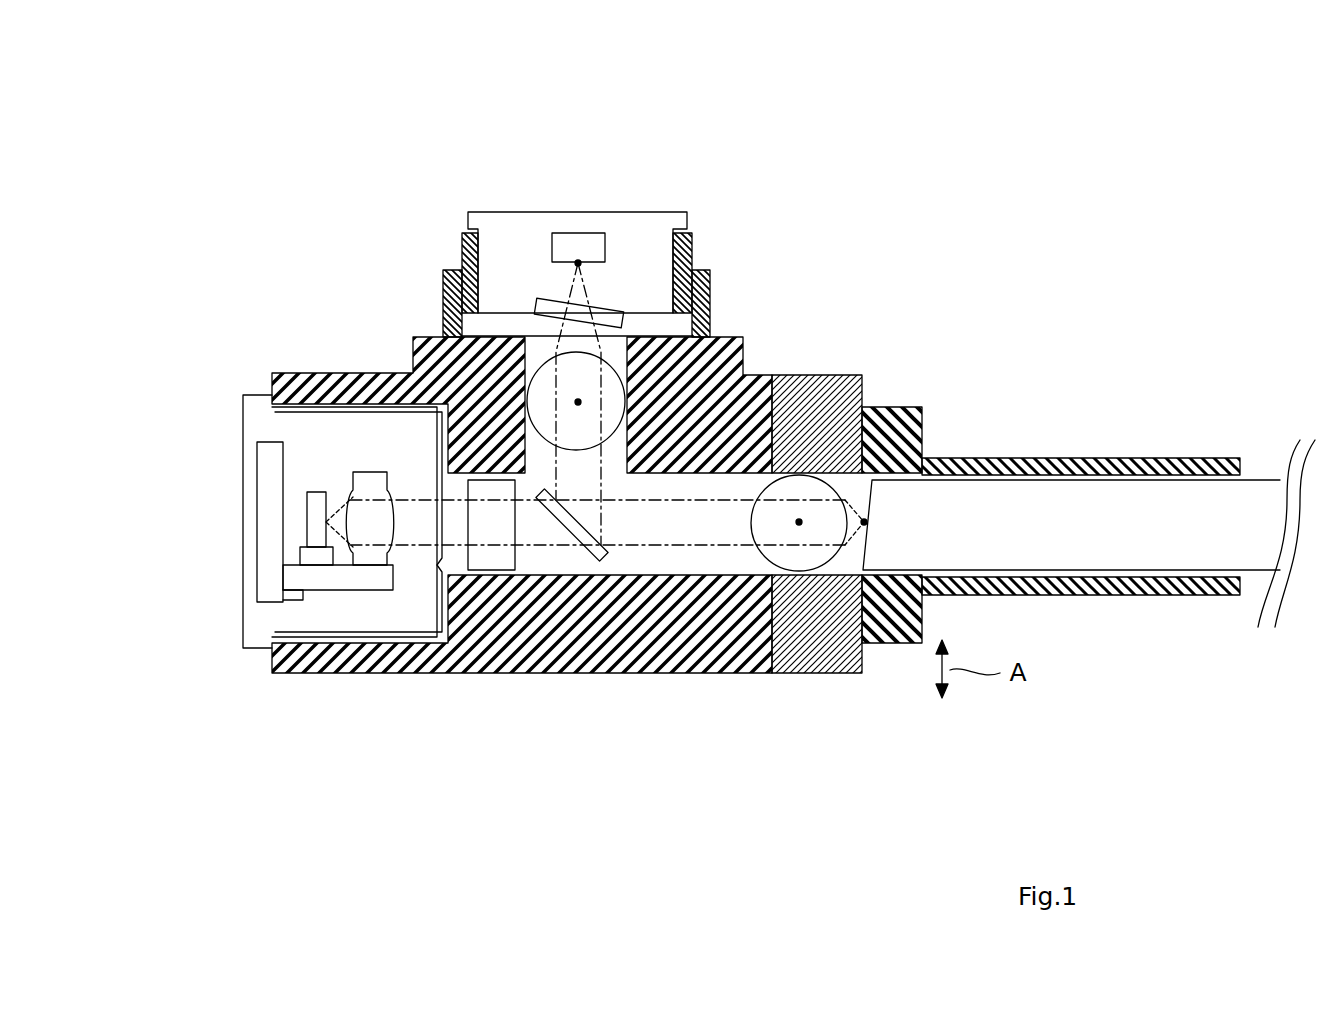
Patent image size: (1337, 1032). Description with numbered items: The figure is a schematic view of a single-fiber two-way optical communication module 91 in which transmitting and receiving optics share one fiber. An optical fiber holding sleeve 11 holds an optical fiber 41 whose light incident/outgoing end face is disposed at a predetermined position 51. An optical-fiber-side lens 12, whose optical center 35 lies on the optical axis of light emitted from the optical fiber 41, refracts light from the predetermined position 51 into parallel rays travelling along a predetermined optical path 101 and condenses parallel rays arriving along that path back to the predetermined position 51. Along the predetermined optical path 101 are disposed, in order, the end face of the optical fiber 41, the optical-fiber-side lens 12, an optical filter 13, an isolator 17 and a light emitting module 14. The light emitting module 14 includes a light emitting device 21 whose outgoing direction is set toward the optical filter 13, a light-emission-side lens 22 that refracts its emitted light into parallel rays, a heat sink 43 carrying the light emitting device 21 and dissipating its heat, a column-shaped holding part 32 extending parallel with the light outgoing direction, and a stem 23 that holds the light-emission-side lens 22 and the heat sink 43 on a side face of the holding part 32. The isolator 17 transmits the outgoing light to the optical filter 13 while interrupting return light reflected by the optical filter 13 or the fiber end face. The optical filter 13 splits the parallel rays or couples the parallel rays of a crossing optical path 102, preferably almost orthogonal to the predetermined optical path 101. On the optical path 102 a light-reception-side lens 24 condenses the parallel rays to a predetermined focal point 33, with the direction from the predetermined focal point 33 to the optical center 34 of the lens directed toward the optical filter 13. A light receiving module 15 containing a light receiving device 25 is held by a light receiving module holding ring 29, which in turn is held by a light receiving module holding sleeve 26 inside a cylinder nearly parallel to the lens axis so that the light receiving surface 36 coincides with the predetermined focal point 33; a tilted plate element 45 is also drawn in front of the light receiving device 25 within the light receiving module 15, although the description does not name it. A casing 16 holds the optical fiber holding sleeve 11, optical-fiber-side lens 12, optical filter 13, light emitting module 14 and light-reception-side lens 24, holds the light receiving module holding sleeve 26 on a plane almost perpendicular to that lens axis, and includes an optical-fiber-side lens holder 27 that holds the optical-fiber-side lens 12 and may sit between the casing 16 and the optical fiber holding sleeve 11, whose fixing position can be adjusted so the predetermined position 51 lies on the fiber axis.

The optical fiber holding sleeve 11 is at (1180, 458).
The optical-fiber-side lens 12 is at (757, 554).
The optical filter 13 is at (588, 556).
The light emitting module 14 is at (260, 527).
The light receiving module 15 is at (574, 300).
The casing 16 is at (422, 673).
The isolator 17 is at (515, 553).
The light emitting device 21 is at (307, 494).
The light-emission-side lens 22 is at (365, 472).
The stem 23 is at (254, 508).
The light-reception-side lens 24 is at (543, 361).
The light receiving device 25 is at (618, 326).
The light receiving module holding sleeve 26 is at (443, 272).
The optical-fiber-side lens holder 27 is at (806, 375).
The light receiving module holding ring 29 is at (462, 238).
The holding part 32 is at (300, 592).
The predetermined focal point 33 is at (580, 266).
The optical center 34 is at (578, 402).
The optical center 35 is at (799, 522).
The light receiving surface 36 is at (606, 262).
The optical fiber 41 is at (1255, 478).
The heat sink 43 is at (300, 556).
The optical filter 45 is at (537, 297).
The predetermined position 51 is at (858, 530).
The single-fiber two-way optical communication module 91 is at (958, 302).
The predetermined optical path 101 is at (673, 545).
The optical path 102 is at (522, 466).